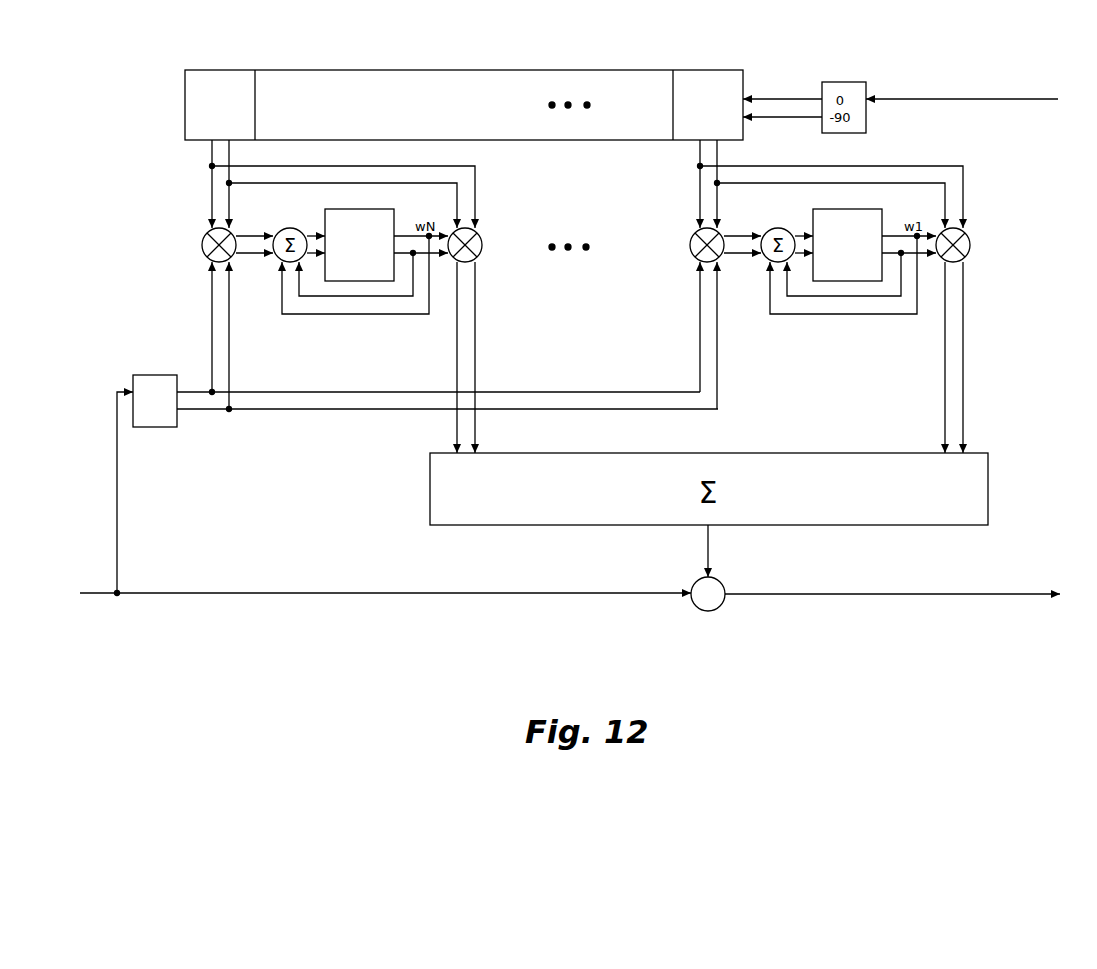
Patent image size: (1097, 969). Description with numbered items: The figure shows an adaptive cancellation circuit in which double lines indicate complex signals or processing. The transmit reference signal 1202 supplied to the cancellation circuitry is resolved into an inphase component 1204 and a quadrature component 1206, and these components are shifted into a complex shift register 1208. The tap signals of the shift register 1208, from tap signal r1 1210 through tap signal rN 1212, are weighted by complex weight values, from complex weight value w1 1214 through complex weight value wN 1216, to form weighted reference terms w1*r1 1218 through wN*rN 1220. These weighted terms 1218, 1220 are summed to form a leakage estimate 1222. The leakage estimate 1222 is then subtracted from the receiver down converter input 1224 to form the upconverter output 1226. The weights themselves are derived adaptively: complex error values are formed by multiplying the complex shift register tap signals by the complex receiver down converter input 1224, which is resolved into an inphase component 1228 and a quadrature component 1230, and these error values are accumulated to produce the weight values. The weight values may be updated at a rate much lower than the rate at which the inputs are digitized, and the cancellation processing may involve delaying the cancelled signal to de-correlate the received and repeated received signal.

The transmit reference signal 1202 is at (1023, 108).
The inphase component 1204 is at (778, 92).
The quadrature component 1206 is at (777, 127).
The complex shift register 1208 is at (533, 63).
The tap signal r1 1210 is at (710, 95).
The tap signal rN 1212 is at (220, 88).
The complex weight value w1 1214 is at (861, 237).
The complex weight value wN 1216 is at (421, 217).
The weighted reference term w1*r1 1218 is at (906, 340).
The weighted reference term wN*rN 1220 is at (412, 341).
The leakage estimate 1222 is at (718, 552).
The receiver down converter input 1224 is at (98, 602).
The upconverter output 1226 is at (1023, 603).
The inphase component of receiver down converter input 1228 is at (195, 383).
The quadrature component of receiver down converter input 1230 is at (193, 418).